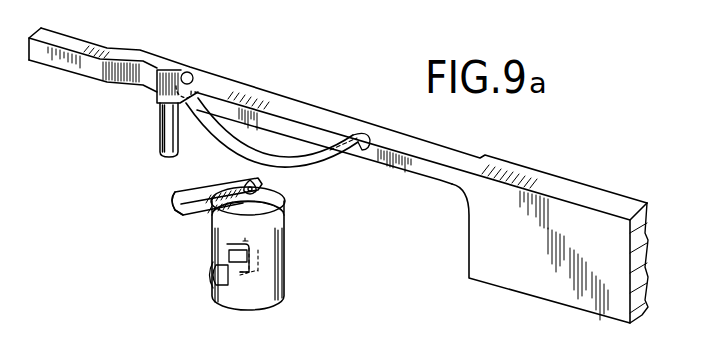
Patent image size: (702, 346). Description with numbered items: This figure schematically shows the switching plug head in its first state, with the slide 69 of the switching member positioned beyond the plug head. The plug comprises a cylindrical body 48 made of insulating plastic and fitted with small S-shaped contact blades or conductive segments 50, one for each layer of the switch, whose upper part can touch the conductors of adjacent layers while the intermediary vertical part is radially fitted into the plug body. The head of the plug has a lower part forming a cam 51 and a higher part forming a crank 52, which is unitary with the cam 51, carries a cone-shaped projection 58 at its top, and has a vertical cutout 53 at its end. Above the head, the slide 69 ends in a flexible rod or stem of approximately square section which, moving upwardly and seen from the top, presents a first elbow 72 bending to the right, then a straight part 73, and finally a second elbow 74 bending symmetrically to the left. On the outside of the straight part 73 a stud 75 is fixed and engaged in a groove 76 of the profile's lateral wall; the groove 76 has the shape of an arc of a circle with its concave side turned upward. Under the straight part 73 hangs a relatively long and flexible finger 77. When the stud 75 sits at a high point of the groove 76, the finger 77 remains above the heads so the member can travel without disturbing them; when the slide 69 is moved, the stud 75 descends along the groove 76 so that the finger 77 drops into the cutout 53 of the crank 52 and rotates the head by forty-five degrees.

The cylindrical body 48 is at (283, 278).
The contact blade 50 is at (210, 271).
The cam 51 is at (204, 220).
The crank 52 is at (198, 189).
The vertical cutout 53 is at (177, 205).
The cone-shaped projection 58 is at (250, 181).
The slide 69 is at (486, 283).
The first elbow 72 is at (220, 88).
The straight part 73 is at (175, 67).
The second elbow 74 is at (128, 50).
The stud 75 is at (192, 77).
The groove 76 is at (323, 163).
The finger 77 is at (158, 138).